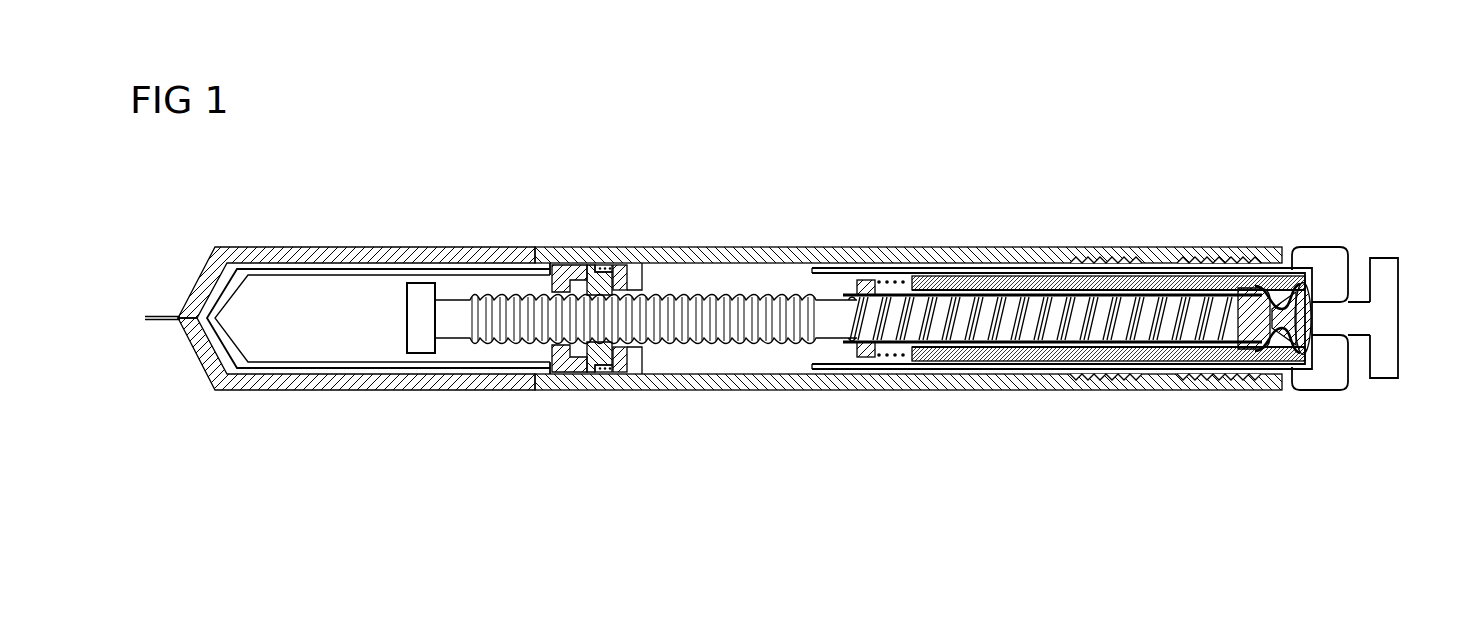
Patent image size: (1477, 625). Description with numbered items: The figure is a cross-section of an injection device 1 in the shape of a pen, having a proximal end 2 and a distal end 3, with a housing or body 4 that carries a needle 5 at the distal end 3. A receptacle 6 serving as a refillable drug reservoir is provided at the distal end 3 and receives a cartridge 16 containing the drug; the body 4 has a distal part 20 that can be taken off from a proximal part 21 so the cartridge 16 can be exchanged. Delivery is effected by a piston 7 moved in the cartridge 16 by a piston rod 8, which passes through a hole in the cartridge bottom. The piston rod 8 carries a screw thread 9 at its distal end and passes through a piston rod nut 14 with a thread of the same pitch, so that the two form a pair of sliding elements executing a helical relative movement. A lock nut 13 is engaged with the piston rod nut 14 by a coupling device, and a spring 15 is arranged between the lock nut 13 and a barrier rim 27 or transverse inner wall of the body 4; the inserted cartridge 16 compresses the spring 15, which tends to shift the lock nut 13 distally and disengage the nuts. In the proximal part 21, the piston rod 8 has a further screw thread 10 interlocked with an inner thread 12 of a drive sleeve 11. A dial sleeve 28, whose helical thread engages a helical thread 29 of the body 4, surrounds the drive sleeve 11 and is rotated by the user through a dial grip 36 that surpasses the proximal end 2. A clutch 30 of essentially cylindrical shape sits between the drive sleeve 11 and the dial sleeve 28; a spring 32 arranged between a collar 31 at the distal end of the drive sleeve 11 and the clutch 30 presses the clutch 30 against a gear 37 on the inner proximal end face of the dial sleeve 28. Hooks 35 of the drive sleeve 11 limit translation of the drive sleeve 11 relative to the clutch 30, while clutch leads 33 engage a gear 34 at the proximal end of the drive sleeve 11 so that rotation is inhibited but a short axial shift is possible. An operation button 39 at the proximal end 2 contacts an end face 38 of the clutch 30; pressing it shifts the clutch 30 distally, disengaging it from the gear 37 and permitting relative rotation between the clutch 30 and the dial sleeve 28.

The injection device 1 is at (186, 226).
The proximal end 2 is at (1345, 408).
The distal end 3 is at (178, 400).
The body 4 is at (778, 385).
The needle 5 is at (162, 324).
The receptacle 6 is at (348, 367).
The piston 7 is at (420, 340).
The piston rod 8 is at (838, 320).
The screw thread 9 is at (752, 297).
The further screw thread 10 is at (1000, 315).
The drive sleeve 11 is at (1150, 295).
The inner thread 12 is at (1210, 315).
The lock nut 13 is at (560, 270).
The piston rod nut 14 is at (605, 283).
The spring 15 is at (598, 268).
The cartridge 16 is at (268, 366).
The distal part 20 is at (380, 257).
The proximal part 21 is at (798, 257).
The barrier rim 27 is at (630, 278).
The dial sleeve 28 is at (957, 273).
The helical thread 29 is at (1128, 372).
The clutch 30 is at (1173, 358).
The collar 31 is at (865, 357).
The spring 32 is at (905, 358).
The clutch leads 33 is at (1285, 290).
The gear 34 is at (1273, 322).
The hooks 35 is at (1312, 292).
The dial grip 36 is at (1325, 258).
The gear 37 is at (1315, 346).
The end face 38 is at (1318, 318).
The operation button 39 is at (1390, 362).